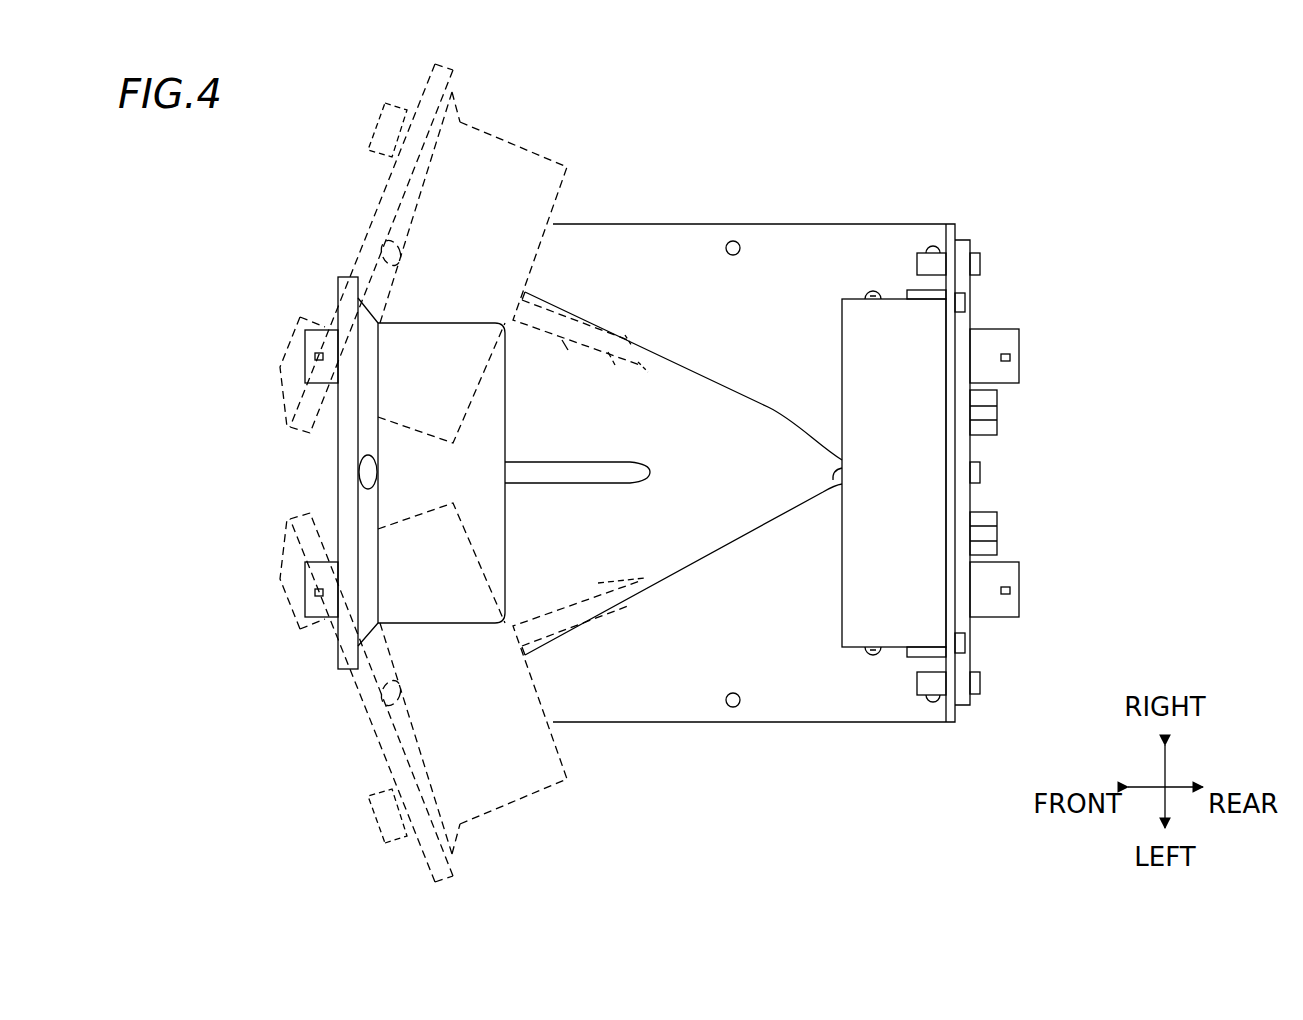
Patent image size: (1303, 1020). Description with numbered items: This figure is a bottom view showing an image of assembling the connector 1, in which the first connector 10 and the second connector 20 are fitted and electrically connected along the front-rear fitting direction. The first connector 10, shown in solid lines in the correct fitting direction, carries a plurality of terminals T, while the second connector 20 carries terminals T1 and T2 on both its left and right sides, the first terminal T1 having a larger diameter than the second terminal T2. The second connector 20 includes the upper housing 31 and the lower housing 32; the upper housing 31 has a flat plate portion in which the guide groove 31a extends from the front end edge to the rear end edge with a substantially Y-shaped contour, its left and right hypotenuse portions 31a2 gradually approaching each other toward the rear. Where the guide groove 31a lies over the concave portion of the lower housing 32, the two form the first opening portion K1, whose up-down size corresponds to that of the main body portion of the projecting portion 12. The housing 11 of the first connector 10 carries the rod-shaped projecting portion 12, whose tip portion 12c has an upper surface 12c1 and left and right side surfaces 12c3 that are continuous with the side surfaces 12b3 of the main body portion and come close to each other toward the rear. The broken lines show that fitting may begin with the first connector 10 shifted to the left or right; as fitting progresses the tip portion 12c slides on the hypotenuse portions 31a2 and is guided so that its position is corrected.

The connector 1 is at (800, 442).
The first connector 10 is at (488, 153).
The housing 11 is at (572, 186).
The projecting portion 12 is at (568, 313).
The side surfaces of the main body portion 12b3 is at (565, 345).
The tip portion 12c is at (612, 358).
The upper surface of the tip portion 12c1 is at (628, 340).
The side surfaces of the tip portion 12c3 is at (645, 368).
The second connector 20 is at (1016, 437).
The upper housing 31 is at (891, 698).
The guide groove 31a is at (682, 473).
The hypotenuse portions 31a2 is at (727, 394).
The lower housing 32 is at (863, 622).
The first opening portion K1 is at (835, 490).
The terminals T is at (312, 347).
The first terminal T1 is at (1008, 342).
The second terminal T2 is at (988, 413).